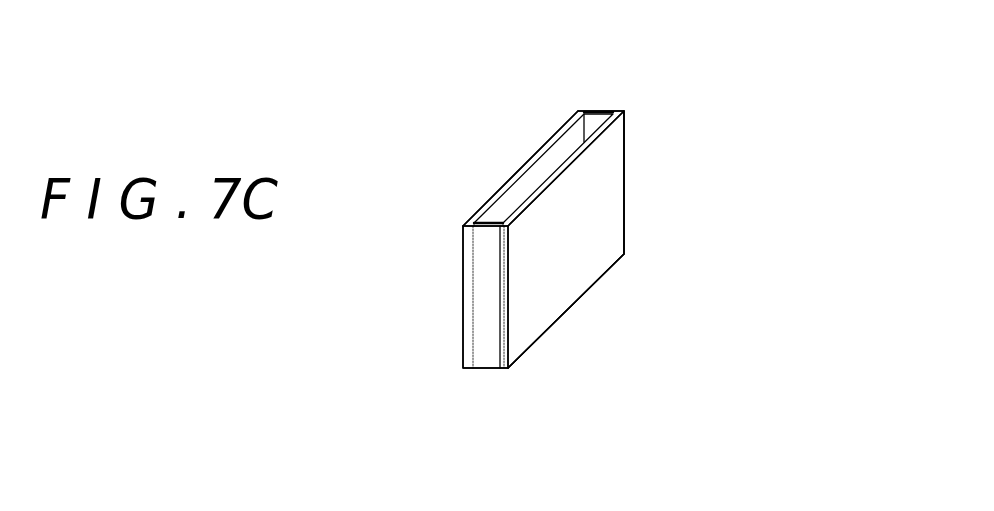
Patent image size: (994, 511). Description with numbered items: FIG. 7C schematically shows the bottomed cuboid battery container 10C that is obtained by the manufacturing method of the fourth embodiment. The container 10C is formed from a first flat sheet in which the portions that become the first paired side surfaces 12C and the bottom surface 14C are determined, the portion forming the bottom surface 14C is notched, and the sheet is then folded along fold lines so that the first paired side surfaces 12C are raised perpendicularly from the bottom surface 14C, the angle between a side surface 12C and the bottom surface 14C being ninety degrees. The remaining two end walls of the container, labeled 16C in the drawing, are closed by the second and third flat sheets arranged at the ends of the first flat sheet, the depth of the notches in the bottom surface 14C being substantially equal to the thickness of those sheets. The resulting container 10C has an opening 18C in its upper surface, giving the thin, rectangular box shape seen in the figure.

The battery container 10C is at (532, 200).
The first paired side surfaces 12C is at (512, 178).
The bottom surface 14C is at (565, 313).
The frame (spacer) member 16C is at (485, 279).
The opening 18C is at (550, 168).